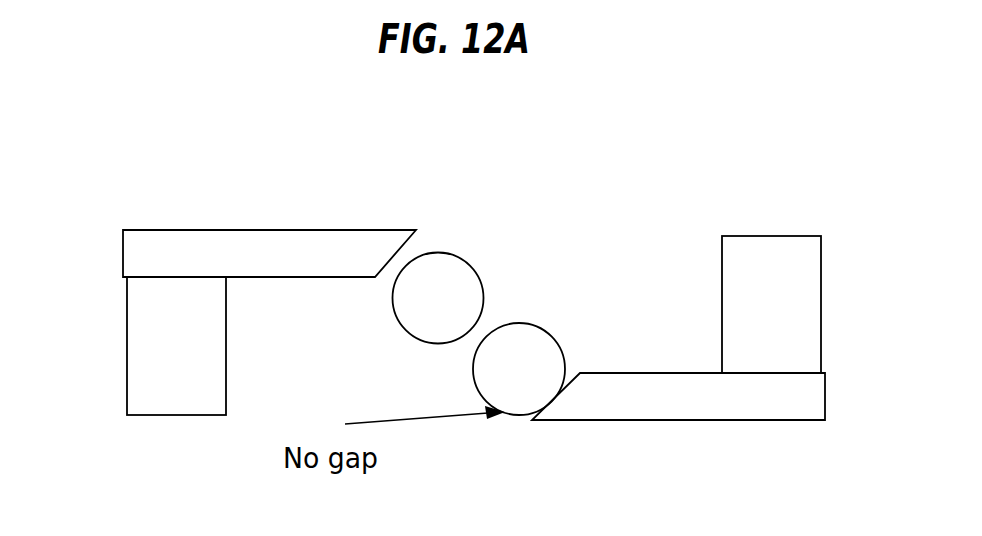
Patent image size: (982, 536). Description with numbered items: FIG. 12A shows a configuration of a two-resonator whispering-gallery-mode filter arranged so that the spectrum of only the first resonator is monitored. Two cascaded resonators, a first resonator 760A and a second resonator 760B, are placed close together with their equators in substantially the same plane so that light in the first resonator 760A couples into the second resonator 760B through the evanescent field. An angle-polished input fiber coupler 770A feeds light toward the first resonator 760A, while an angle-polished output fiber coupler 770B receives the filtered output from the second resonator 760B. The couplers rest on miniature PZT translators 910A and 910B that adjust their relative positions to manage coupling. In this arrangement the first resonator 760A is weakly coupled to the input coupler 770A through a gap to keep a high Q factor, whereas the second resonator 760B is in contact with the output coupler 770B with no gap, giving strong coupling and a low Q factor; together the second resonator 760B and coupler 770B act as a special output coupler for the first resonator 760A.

The input optical coupler 770A is at (387, 237).
The PZT translator 910A is at (127, 335).
The first WGM resonator 760A is at (393, 315).
The second WGM resonator 760B is at (552, 353).
The output optical coupler 770B is at (825, 392).
The PZT translator 910B is at (825, 293).